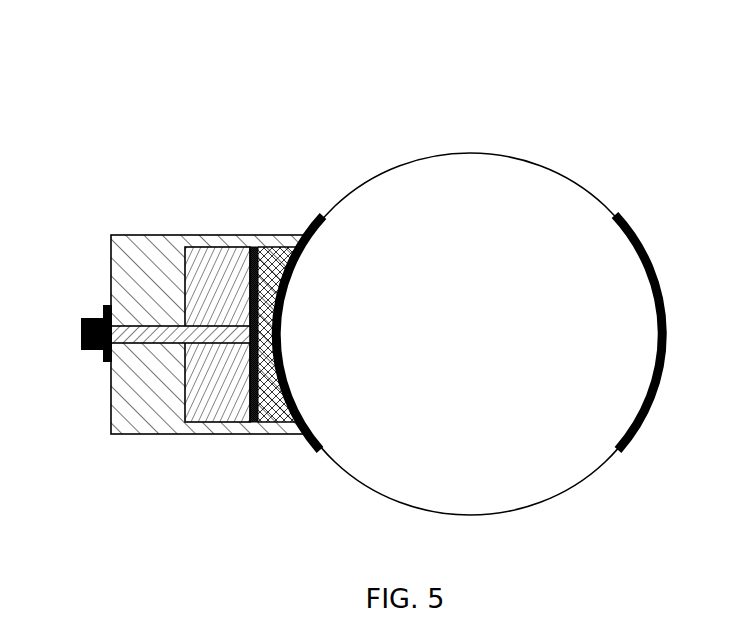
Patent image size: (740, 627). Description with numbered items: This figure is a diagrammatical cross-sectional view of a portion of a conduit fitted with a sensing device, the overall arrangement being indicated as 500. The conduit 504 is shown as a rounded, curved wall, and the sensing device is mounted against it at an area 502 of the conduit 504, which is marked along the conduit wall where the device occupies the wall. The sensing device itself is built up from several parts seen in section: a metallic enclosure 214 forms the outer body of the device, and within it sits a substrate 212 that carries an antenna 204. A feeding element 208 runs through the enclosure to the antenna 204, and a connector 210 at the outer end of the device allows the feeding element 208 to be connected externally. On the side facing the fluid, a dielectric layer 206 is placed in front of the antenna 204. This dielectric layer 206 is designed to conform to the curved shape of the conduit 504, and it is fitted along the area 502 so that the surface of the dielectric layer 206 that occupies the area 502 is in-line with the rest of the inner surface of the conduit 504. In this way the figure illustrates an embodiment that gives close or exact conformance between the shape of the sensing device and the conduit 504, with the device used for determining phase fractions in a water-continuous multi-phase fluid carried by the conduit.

The sensor assembly 500 is at (506, 337).
The area of the conduit 502 is at (323, 443).
The conduit 504 is at (541, 166).
The antenna 204 is at (256, 247).
The dielectric layer 206 is at (279, 424).
The feeding element 208 is at (140, 327).
The connector 210 is at (99, 352).
The substrate 212 is at (202, 423).
The metallic enclosure 214 is at (133, 430).